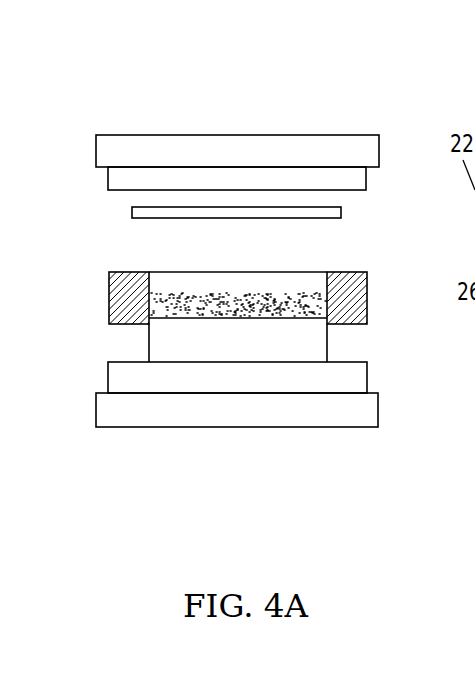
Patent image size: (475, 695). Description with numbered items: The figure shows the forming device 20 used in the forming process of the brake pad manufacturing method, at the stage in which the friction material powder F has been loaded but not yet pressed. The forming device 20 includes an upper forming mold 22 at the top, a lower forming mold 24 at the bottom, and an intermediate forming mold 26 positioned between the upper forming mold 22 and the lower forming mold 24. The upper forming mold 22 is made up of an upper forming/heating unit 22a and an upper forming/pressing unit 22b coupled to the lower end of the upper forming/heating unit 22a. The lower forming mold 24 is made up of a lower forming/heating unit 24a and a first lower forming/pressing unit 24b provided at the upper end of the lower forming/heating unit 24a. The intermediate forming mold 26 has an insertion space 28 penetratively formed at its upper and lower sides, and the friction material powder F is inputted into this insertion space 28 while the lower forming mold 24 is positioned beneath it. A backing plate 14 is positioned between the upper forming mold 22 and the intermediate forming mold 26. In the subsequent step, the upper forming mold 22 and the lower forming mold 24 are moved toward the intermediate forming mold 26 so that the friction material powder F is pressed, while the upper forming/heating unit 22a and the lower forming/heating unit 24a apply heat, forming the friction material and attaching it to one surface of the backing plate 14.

The forming device 20 is at (165, 96).
The upper forming mold 22 is at (90, 143).
The upper forming/heating unit 22a is at (367, 148).
The upper forming/pressing unit 22b is at (350, 180).
The backing plate 14 is at (335, 212).
The insertion space 28 is at (179, 283).
The friction material powder F is at (277, 292).
The intermediate forming mold 26 is at (378, 317).
The first lower forming/pressing unit 24b is at (358, 378).
The lower forming/heating unit 24a is at (370, 413).
The lower forming mold 24 is at (340, 441).